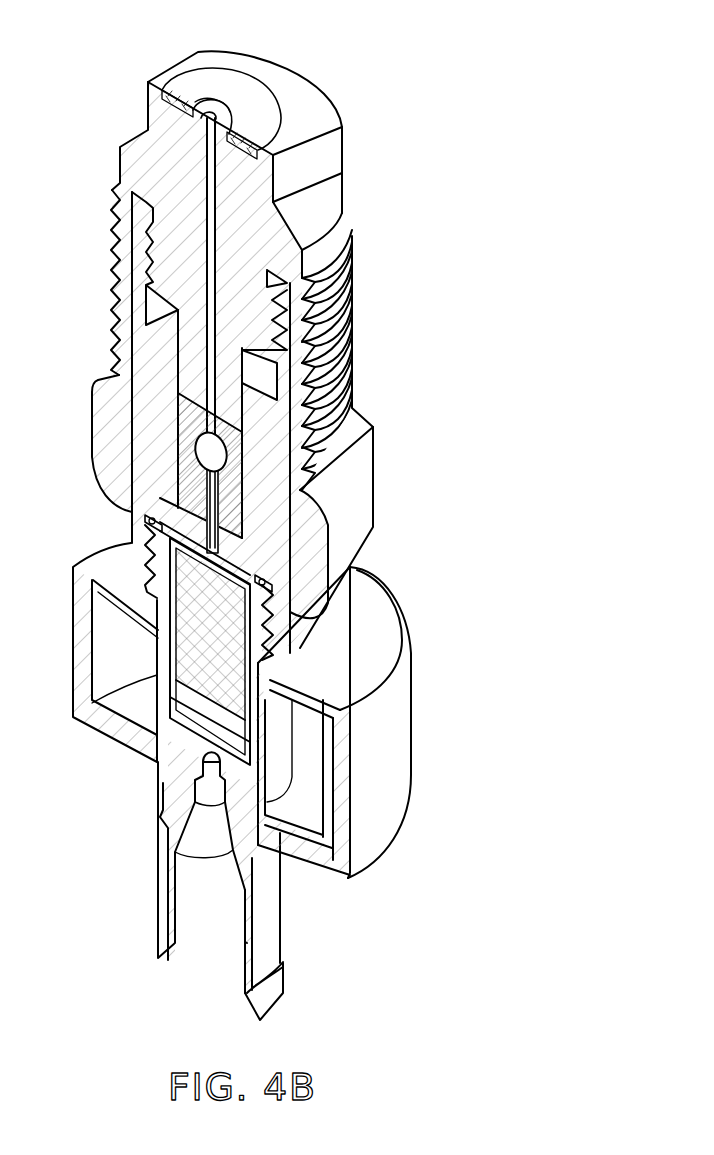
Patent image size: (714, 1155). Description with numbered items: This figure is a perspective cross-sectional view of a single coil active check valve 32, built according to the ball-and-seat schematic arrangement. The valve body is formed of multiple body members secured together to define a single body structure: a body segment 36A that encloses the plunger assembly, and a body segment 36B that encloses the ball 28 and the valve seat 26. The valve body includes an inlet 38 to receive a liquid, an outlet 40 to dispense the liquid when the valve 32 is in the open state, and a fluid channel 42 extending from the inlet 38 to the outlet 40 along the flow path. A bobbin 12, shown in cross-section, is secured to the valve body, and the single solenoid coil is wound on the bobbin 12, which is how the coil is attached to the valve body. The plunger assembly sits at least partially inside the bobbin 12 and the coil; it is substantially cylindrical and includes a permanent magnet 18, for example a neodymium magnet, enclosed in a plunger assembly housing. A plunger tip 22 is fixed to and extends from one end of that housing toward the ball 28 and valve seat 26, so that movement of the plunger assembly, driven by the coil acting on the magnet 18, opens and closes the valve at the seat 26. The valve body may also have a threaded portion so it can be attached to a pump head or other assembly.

The single coil active check valve 32 is at (386, 117).
The outlet 40 is at (212, 116).
The fluid channel 42 is at (216, 246).
The valve seat 26 is at (198, 486).
The plunger tip 22 is at (222, 508).
The ball 28 is at (228, 456).
The body segment 36A is at (140, 540).
The body segment 36B is at (167, 815).
The permanent magnet 18 is at (224, 661).
The bobbin 12 is at (83, 720).
The inlet 38 is at (196, 765).